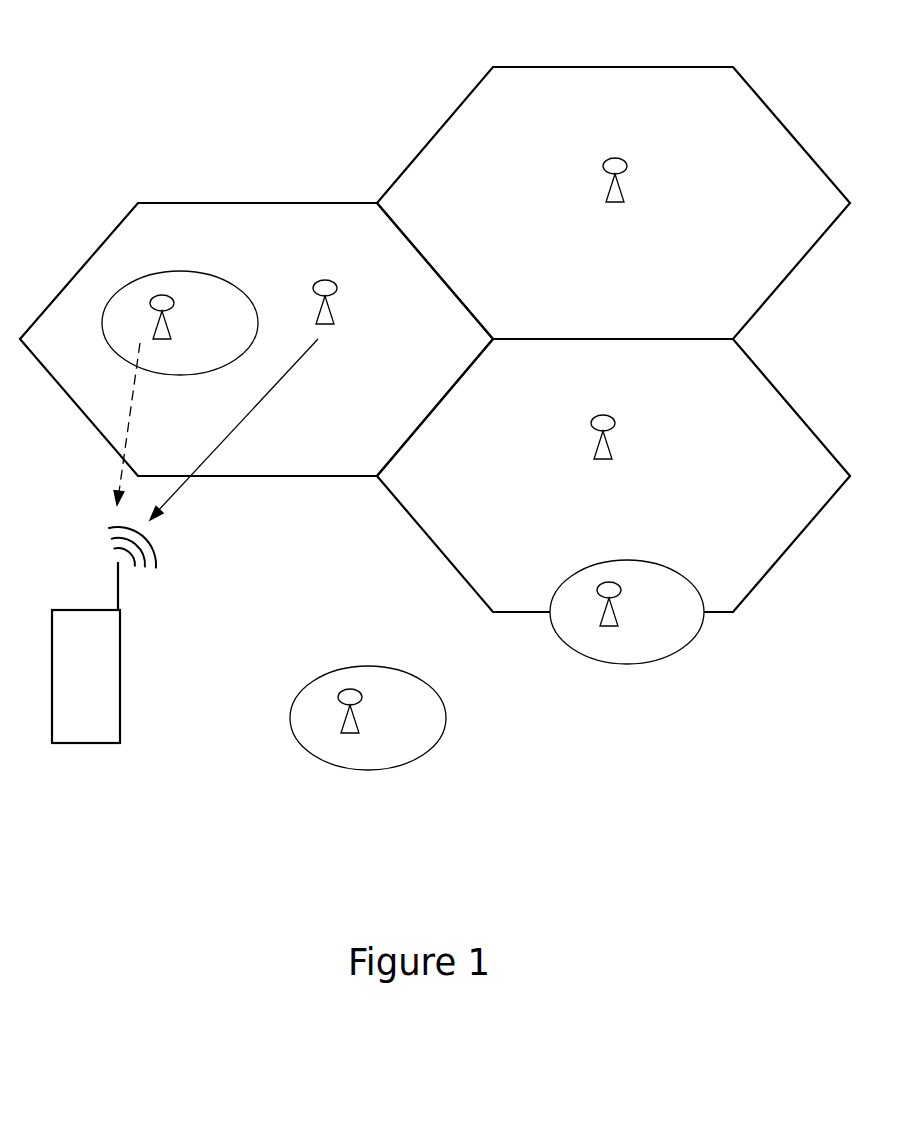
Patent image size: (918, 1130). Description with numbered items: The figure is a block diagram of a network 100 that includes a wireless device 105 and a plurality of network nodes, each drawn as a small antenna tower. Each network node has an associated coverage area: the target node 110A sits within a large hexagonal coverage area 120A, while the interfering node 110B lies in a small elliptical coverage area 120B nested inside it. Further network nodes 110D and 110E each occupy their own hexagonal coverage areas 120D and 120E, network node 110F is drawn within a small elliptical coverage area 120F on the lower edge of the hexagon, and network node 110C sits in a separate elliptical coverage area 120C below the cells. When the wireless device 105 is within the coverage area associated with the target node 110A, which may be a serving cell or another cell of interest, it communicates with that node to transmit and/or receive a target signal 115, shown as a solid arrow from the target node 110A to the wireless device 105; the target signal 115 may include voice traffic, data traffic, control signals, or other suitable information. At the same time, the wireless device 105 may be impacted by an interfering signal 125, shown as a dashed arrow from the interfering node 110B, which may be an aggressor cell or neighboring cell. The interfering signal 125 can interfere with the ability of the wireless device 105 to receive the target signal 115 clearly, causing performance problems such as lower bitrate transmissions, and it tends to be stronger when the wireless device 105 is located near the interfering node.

The network 100 is at (435, 399).
The wireless device 105 is at (107, 691).
The target node 110A is at (330, 305).
The interfering node 110B is at (172, 323).
The network node 110C is at (357, 720).
The network node 110D is at (620, 160).
The network node 110E is at (608, 440).
The network node 110F is at (616, 615).
The target signal 115 is at (245, 420).
The coverage area 120A is at (240, 203).
The coverage area 120B is at (175, 272).
The coverage area 120C is at (368, 666).
The coverage area 120D is at (600, 67).
The coverage area 120E is at (818, 383).
The coverage area 120F is at (590, 565).
The interfering signal 125 is at (128, 437).